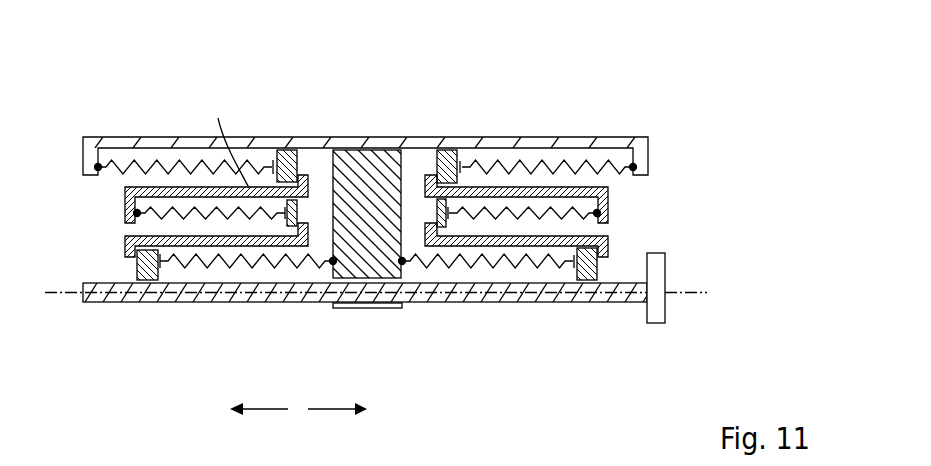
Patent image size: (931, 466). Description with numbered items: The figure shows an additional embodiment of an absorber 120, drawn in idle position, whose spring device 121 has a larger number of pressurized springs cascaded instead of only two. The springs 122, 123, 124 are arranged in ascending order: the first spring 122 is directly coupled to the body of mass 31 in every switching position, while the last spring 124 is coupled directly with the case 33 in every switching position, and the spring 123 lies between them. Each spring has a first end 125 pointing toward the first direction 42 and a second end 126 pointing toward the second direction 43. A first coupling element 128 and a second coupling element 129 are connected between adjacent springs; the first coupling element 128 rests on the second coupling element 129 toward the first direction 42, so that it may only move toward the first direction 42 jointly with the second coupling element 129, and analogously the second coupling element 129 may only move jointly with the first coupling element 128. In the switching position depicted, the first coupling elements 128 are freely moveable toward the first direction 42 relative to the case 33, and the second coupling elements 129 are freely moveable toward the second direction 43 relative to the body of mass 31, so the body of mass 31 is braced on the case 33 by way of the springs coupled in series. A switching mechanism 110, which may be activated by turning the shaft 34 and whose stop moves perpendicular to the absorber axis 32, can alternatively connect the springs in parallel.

The absorber 120 is at (710, 68).
The spring device 121 is at (67, 62).
The last spring 124 is at (148, 168).
The spring 123 is at (178, 217).
The first spring 122 is at (227, 260).
The first end 125 is at (279, 183).
The second end 126 is at (98, 167).
The first coupling element 128 is at (588, 265).
The second coupling element 129 is at (443, 218).
The body of mass 31 is at (370, 170).
The case 33 is at (421, 148).
The shaft 34 is at (620, 293).
The absorber axis 32 is at (678, 295).
The switching mechanism 110 is at (655, 315).
The first direction 42 is at (273, 410).
The second direction 43 is at (335, 410).